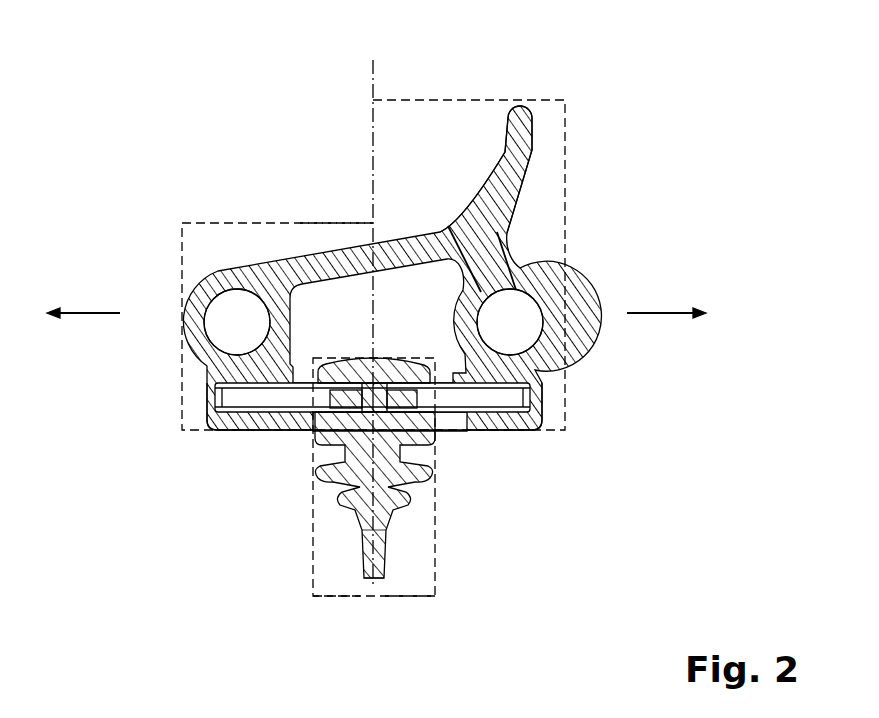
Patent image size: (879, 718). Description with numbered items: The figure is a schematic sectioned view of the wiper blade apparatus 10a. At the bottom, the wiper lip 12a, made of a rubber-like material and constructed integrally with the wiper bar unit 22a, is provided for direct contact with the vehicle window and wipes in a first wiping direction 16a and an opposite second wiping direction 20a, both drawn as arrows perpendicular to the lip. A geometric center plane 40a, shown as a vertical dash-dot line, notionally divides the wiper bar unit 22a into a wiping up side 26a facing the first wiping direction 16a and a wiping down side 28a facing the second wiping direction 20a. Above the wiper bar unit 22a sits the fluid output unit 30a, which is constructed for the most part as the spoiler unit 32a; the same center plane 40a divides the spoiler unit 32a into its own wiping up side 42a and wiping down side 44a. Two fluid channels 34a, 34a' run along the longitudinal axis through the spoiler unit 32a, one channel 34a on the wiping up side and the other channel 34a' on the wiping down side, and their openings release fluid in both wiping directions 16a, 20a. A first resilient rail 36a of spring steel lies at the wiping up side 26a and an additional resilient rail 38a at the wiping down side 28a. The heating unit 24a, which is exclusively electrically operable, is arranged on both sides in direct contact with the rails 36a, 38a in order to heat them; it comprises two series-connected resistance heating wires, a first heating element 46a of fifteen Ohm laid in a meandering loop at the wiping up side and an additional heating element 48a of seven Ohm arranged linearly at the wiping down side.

The wiper blade apparatus 10a is at (200, 88).
The wiper lip 12a is at (375, 580).
The first wiping direction 16a is at (657, 312).
The second wiping direction 20a is at (92, 312).
The wiper bar unit 22a is at (435, 447).
The heating unit 24a is at (600, 218).
The wiping up side 26a is at (405, 597).
The wiping down side 28a is at (340, 597).
The fluid output unit 30a is at (168, 230).
The spoiler unit 32a is at (293, 272).
The fluid channel 34a is at (177, 328).
The fluid channel 34a' is at (565, 329).
The first resilient rail 36a is at (527, 432).
The additional resilient rail 38a is at (243, 432).
The geometric center plane 40a is at (375, 80).
The wiping up side 42a is at (565, 138).
The wiping down side 44a is at (317, 223).
The first heating element 46a is at (540, 378).
The additional heating element 48a is at (217, 387).